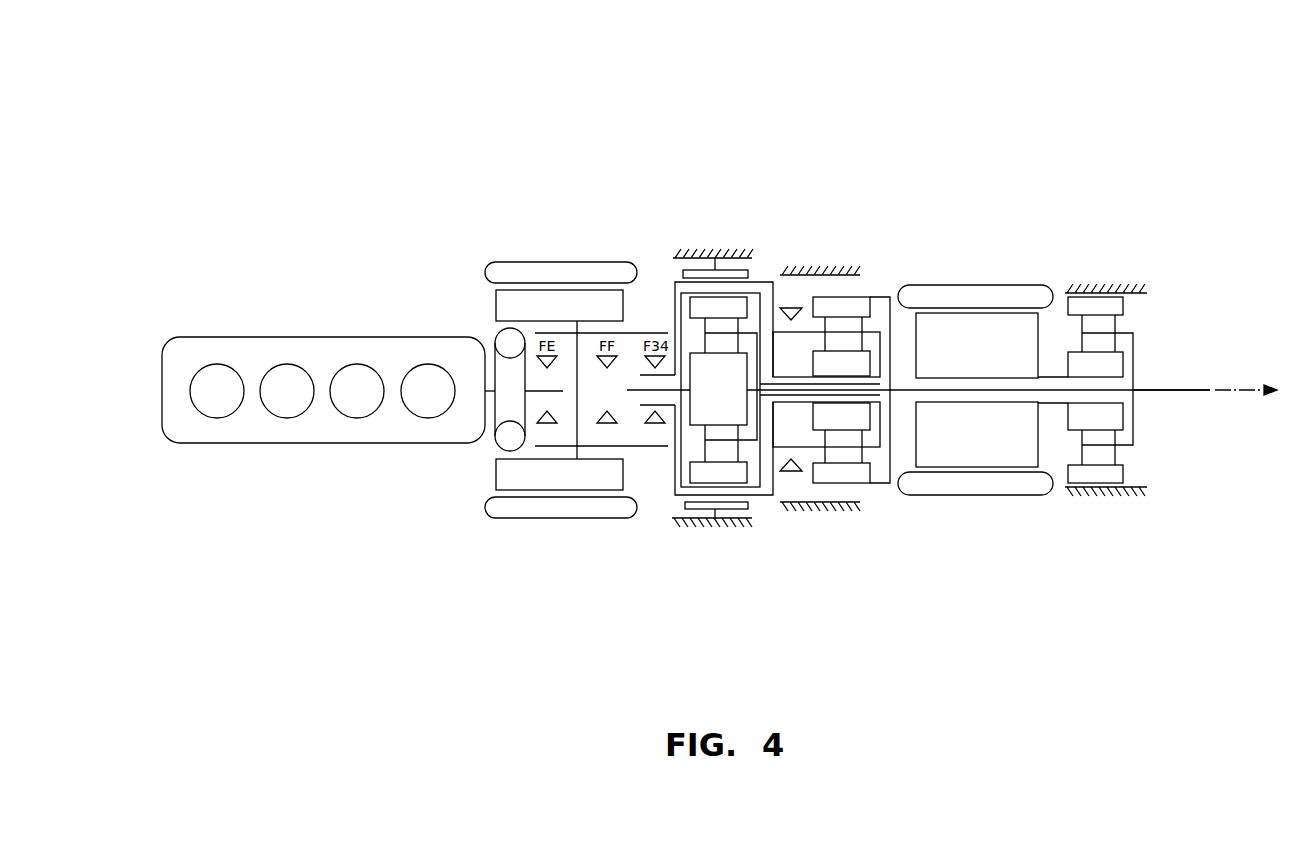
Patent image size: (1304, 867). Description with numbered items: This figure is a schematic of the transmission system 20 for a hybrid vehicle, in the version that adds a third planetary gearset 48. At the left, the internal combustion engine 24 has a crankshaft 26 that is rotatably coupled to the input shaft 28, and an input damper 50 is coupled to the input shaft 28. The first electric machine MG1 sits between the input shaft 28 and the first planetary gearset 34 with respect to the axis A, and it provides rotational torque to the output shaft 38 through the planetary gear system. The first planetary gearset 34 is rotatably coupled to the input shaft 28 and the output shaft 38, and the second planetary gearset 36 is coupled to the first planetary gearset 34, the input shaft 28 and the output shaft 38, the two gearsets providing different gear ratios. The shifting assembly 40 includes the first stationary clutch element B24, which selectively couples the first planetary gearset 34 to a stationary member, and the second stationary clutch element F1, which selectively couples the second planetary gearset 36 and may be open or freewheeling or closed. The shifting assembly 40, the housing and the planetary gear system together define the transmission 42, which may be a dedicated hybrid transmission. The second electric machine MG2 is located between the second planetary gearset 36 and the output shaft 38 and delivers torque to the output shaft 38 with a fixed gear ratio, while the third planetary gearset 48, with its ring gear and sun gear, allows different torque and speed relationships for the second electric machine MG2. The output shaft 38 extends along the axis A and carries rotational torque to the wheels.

The transmission system 20 is at (457, 116).
The internal combustion engine 24 is at (250, 337).
The crankshaft 26 is at (490, 394).
The input shaft 28 is at (537, 394).
The input damper 50 is at (496, 336).
The first planetary gearset 34 is at (669, 524).
The second planetary gearset 36 is at (877, 493).
The third planetary gearset 48 is at (1103, 520).
The output shaft 38 is at (1193, 394).
The shifting assembly 40 is at (820, 155).
The transmission 42 is at (861, 175).
The first electric machine MG1 is at (592, 290).
The second electric machine MG2 is at (963, 312).
The first stationary clutch element B24 is at (712, 377).
The second stationary clutch element F1 is at (820, 388).
The axis A is at (1232, 394).